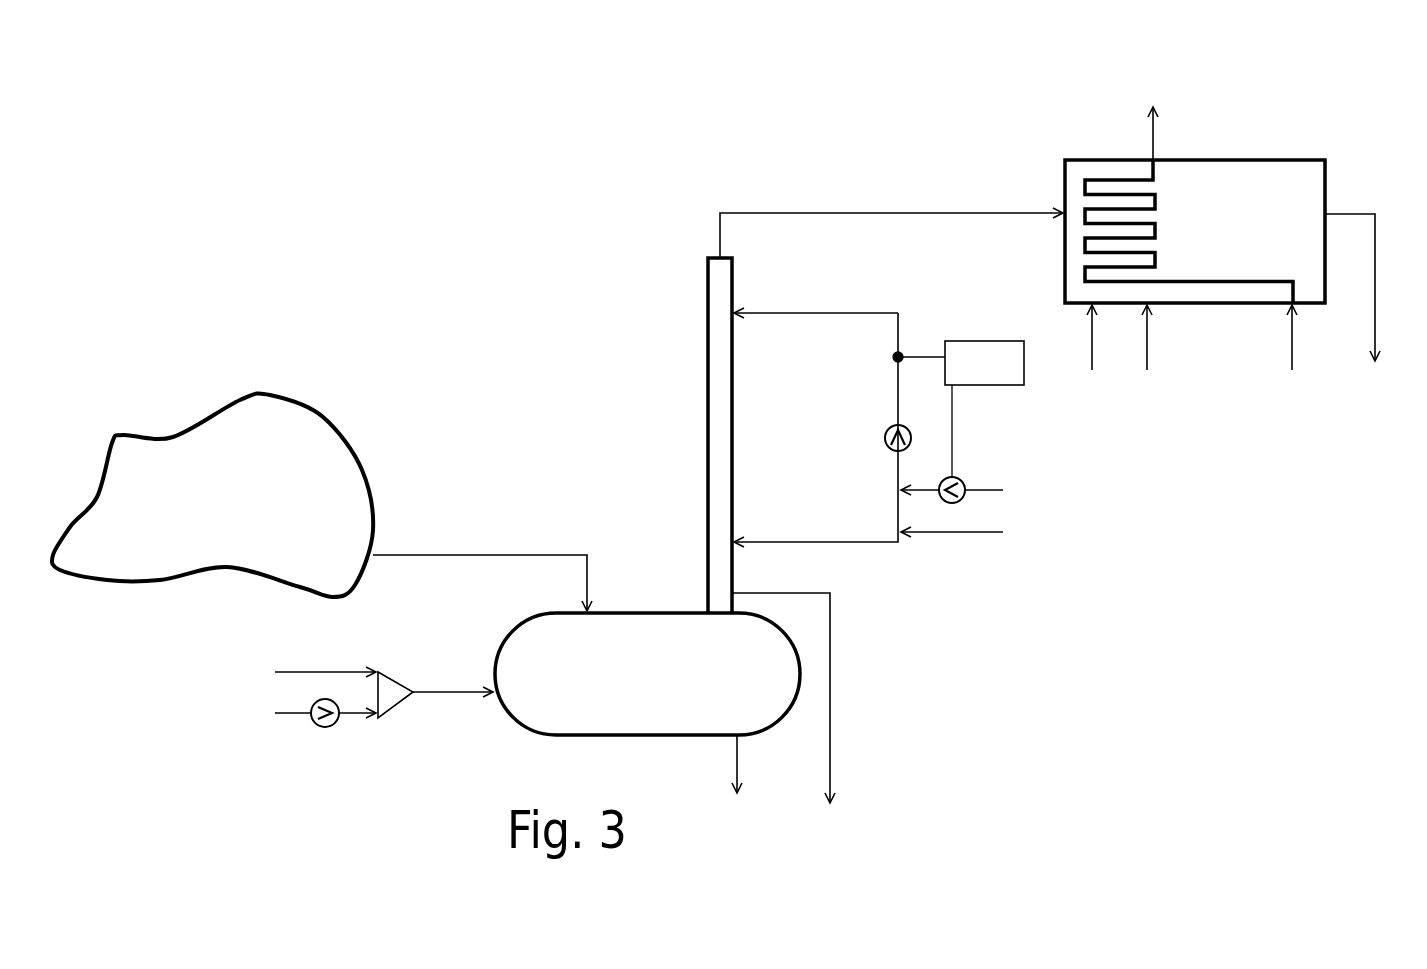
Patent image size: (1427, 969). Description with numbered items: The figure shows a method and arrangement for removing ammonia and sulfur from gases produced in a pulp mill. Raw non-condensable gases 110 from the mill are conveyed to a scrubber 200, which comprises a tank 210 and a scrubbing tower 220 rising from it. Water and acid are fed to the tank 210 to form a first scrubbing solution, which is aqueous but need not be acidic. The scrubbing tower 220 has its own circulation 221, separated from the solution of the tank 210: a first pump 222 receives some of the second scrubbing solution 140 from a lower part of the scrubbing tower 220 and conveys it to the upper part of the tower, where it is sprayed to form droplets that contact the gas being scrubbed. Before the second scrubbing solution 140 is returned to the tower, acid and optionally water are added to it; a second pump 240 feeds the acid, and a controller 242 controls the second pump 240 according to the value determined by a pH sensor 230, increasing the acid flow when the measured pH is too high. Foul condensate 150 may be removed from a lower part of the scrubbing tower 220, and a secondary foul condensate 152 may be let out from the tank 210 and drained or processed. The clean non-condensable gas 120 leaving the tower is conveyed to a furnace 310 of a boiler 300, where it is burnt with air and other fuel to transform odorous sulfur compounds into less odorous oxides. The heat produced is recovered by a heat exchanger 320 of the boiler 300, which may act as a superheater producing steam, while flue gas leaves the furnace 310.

The raw non-condensable gases 110 is at (472, 553).
The clean non-condensable gas 120 is at (882, 210).
The second scrubbing solution 140 is at (898, 378).
The foul condensate 150 is at (830, 747).
The secondary foul condensate 152 is at (743, 782).
The scrubber 200 is at (695, 555).
The tank 210 is at (647, 674).
The scrubbing tower 220 is at (707, 540).
The circulation 221 is at (909, 566).
The first pump 222 is at (888, 449).
The pH sensor 230 is at (900, 355).
The second pump 240 is at (965, 480).
The controller 242 is at (984, 409).
The boiler 300 is at (1328, 197).
The furnace 310 is at (1226, 213).
The heat exchanger 320 is at (1113, 182).